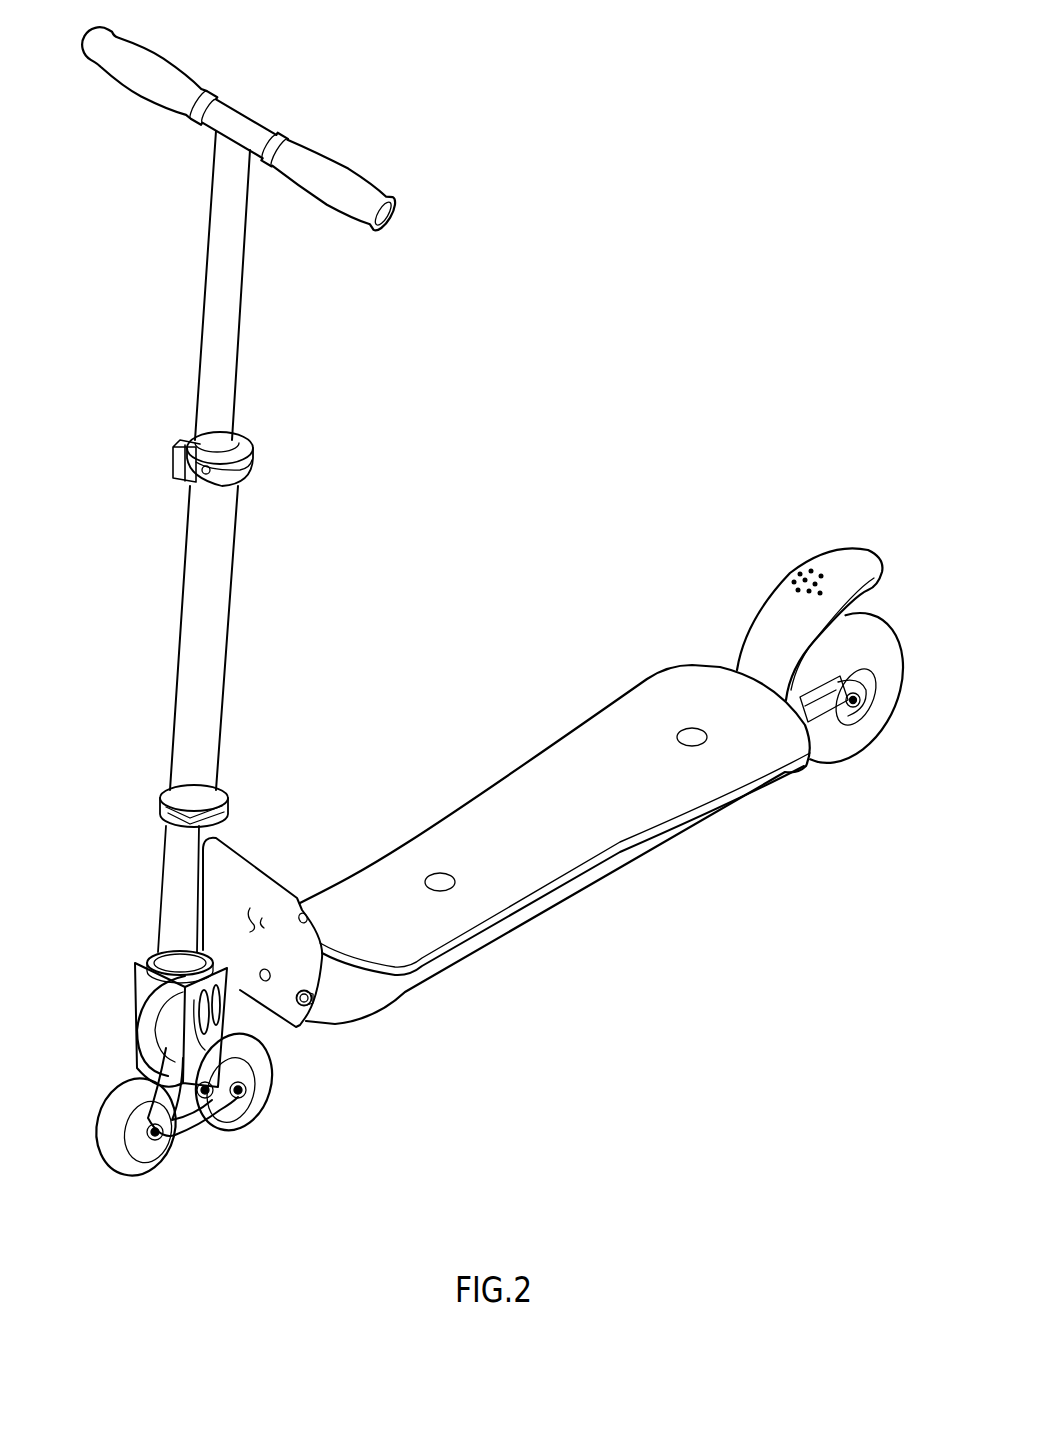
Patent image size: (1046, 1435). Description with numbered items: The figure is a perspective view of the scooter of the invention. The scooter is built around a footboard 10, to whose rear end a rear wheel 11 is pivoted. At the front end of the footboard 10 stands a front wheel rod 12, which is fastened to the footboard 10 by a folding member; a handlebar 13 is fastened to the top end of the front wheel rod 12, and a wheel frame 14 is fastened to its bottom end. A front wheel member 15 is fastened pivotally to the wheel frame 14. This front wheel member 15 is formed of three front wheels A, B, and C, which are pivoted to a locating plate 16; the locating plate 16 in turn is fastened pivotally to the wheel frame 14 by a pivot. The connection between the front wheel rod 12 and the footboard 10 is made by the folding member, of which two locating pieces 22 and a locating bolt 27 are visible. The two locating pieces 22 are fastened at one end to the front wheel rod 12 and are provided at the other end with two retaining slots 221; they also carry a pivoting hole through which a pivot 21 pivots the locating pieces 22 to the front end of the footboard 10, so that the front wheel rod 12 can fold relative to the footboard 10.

The footboard 10 is at (507, 731).
The rear wheel 11 is at (895, 640).
The front wheel rod 12 is at (130, 766).
The handlebar 13 is at (237, 323).
The wheel frame 14 is at (131, 962).
The front wheel member 15 is at (125, 1067).
The locating plate 16 is at (186, 1114).
The pivot 21 is at (267, 967).
The locating pieces 22 is at (233, 853).
The retaining slots 221 is at (306, 912).
The locating bolt 27 is at (313, 1004).
The front wheel A is at (113, 1152).
The front wheel B is at (150, 1032).
The front wheel C is at (235, 1118).